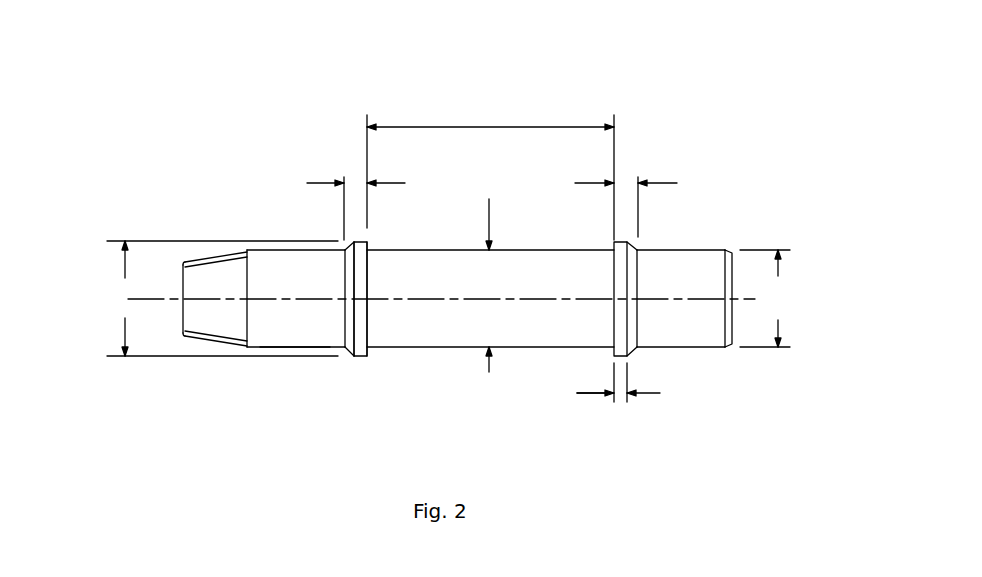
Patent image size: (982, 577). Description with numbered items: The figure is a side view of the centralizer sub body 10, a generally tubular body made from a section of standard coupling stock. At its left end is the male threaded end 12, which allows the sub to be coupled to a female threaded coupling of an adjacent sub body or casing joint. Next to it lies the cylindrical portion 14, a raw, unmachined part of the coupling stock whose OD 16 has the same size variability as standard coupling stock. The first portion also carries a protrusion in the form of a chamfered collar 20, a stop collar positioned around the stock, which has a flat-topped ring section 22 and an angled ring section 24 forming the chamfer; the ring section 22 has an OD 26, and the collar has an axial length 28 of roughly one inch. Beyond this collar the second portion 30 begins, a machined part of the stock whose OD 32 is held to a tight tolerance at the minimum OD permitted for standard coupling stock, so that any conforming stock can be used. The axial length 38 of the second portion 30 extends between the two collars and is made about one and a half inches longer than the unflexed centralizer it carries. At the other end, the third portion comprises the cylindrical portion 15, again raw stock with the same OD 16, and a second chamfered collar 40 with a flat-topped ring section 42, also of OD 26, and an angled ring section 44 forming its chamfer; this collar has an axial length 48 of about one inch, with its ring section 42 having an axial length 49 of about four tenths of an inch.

The centralizer sub body 10 is at (247, 348).
The male threaded end 12 is at (195, 338).
The cylindrical portion 14 is at (288, 348).
The cylindrical portion 15 is at (688, 248).
The OD 16 is at (777, 290).
The chamfered collar 20 is at (345, 241).
The ring section 22 is at (357, 358).
The angled ring section 24 is at (345, 353).
The OD 26 is at (118, 300).
The axial length 28 is at (307, 183).
The second portion 30 is at (455, 347).
The OD 32 is at (489, 199).
The axial length 38 is at (475, 127).
The chamfered collar 40 is at (623, 240).
The ring section 42 is at (625, 362).
The angled ring section 44 is at (635, 352).
The axial length 48 is at (660, 182).
The axial length 49 is at (595, 397).